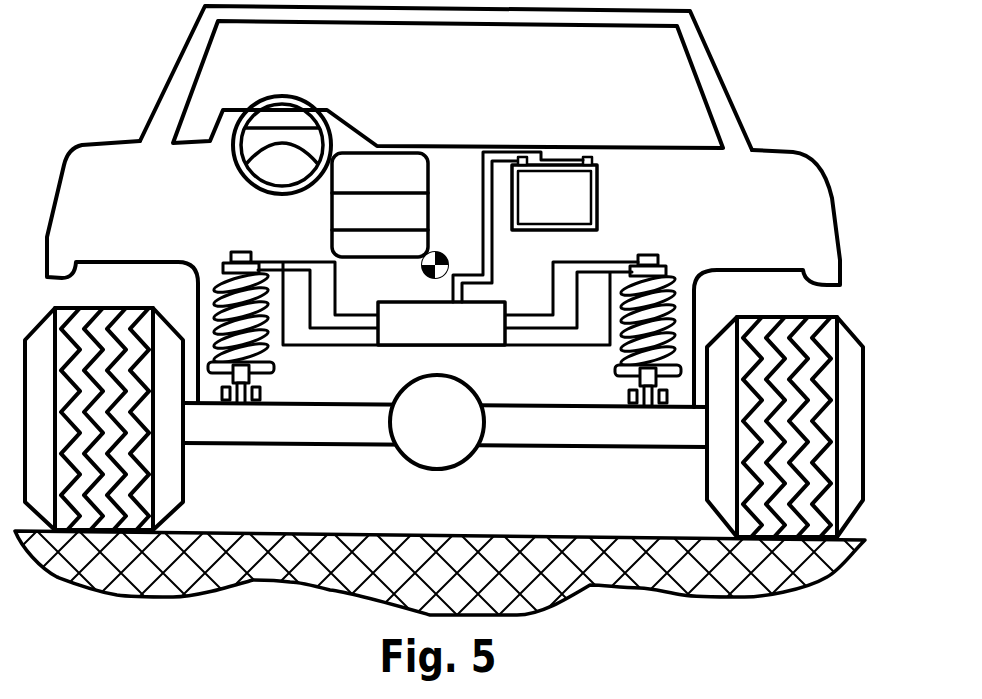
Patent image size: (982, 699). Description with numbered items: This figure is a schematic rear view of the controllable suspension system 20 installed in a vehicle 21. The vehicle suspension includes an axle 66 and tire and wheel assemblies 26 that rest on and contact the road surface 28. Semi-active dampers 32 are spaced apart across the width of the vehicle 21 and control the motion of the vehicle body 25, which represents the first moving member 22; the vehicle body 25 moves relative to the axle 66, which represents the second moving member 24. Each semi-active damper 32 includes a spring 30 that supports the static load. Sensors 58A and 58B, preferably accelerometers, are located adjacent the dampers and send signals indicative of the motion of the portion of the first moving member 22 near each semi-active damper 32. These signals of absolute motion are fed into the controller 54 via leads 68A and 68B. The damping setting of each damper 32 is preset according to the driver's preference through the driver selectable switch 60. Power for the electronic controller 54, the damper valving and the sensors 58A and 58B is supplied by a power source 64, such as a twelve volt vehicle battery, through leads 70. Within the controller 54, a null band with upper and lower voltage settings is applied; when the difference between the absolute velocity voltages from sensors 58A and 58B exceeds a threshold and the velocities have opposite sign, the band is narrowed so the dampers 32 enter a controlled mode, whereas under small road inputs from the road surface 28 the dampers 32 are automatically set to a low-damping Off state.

The controllable suspension system 20 is at (458, 206).
The vehicle 21 is at (125, 95).
The first moving member 22 is at (510, 24).
The second moving member 24 is at (553, 447).
The vehicle body 25 is at (713, 58).
The tire and wheel assemblies 26 is at (183, 468).
The road surface 28 is at (292, 532).
The spring 30 is at (518, 296).
The semi-active damper 32 is at (203, 278).
The controller 54 is at (443, 347).
The sensor 58A is at (190, 224).
The sensor 58B is at (694, 236).
The driver selectable switch 60 is at (449, 192).
The power source 64 is at (597, 167).
The axle 66 is at (327, 435).
The lead 68A is at (220, 276).
The lead 68B is at (665, 288).
The leads 70 is at (492, 236).